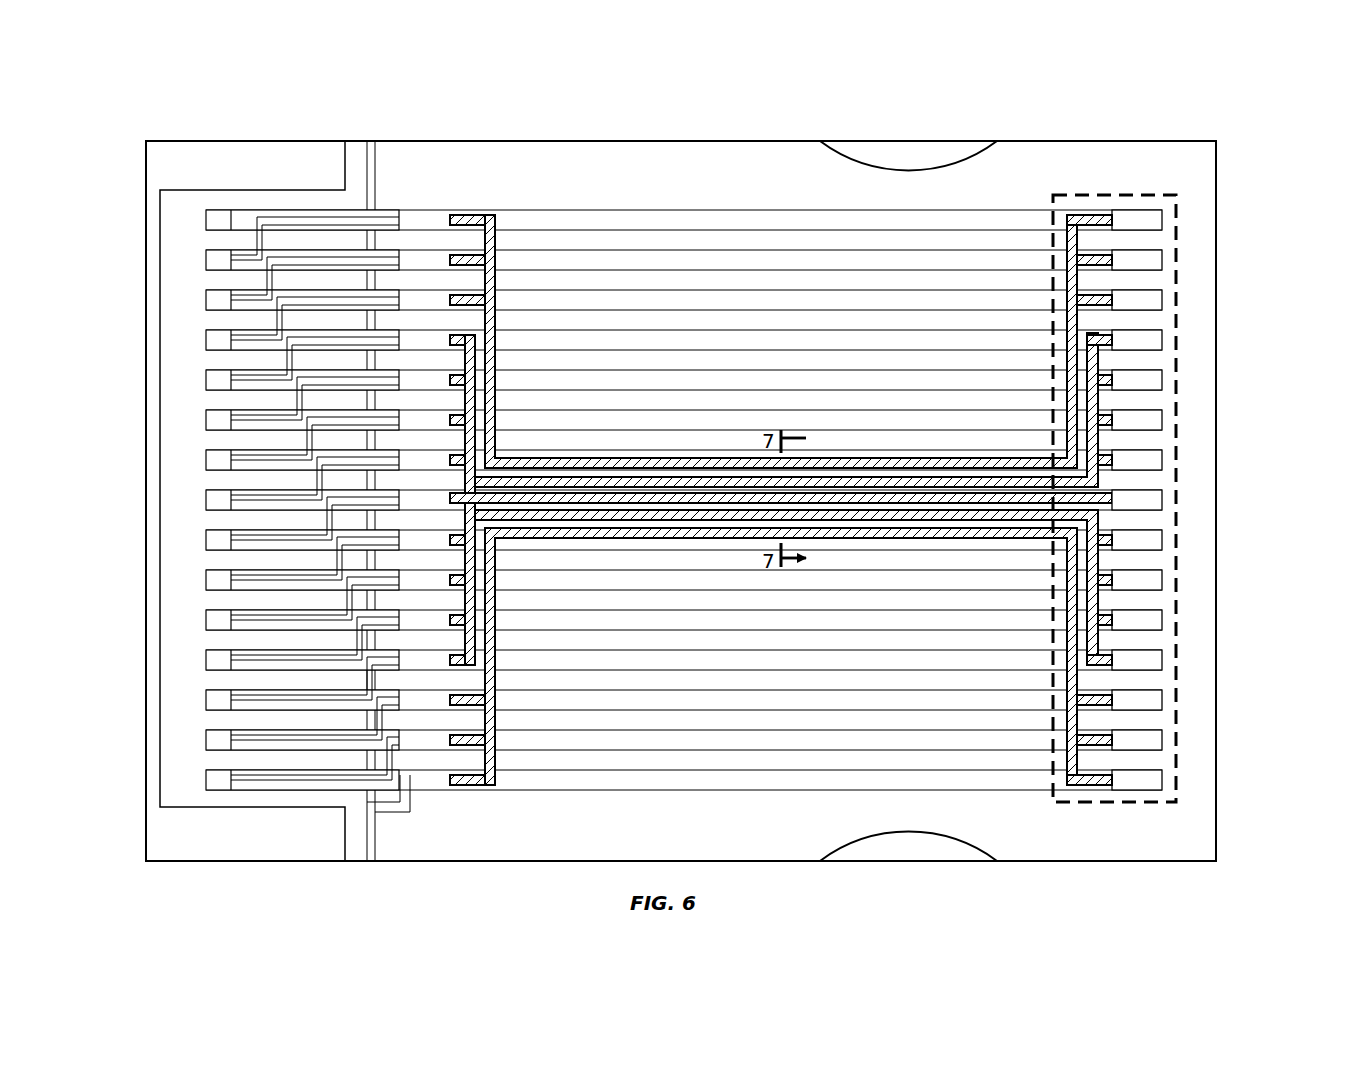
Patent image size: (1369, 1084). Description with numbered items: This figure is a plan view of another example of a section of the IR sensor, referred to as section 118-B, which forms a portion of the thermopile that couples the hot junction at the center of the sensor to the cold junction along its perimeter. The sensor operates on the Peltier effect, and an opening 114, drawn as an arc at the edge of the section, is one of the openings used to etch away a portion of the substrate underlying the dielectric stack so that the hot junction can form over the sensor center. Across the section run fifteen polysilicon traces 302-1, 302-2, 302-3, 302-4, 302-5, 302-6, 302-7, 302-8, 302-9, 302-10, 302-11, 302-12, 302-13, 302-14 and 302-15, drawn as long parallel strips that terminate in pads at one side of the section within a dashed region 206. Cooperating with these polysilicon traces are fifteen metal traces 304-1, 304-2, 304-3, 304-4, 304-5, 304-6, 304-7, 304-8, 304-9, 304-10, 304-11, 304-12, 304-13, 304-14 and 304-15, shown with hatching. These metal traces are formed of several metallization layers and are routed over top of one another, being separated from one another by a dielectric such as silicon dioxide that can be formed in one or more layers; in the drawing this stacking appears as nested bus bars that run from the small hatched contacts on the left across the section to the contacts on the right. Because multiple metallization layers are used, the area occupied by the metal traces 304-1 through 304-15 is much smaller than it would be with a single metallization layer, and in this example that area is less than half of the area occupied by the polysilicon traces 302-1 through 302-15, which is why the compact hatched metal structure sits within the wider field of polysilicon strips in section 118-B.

The section 118-B is at (1249, 162).
The opening 114 is at (966, 840).
The connector region 206 is at (1113, 195).
The polysilicon trace 302-1 is at (1162, 220).
The polysilicon trace 302-2 is at (1162, 260).
The polysilicon trace 302-3 is at (1162, 300).
The polysilicon trace 302-4 is at (1162, 340).
The polysilicon trace 302-5 is at (1162, 380).
The polysilicon trace 302-6 is at (1162, 420).
The polysilicon trace 302-7 is at (1162, 460).
The polysilicon trace 302-8 is at (1162, 500).
The polysilicon trace 302-9 is at (1162, 540).
The polysilicon trace 302-10 is at (1162, 580).
The polysilicon trace 302-11 is at (1162, 620).
The polysilicon trace 302-12 is at (1162, 660).
The polysilicon trace 302-13 is at (1162, 700).
The polysilicon trace 302-14 is at (1162, 740).
The polysilicon trace 302-15 is at (1162, 780).
The metal trace 304-1 is at (478, 215).
The metal trace 304-2 is at (455, 257).
The metal trace 304-3 is at (452, 297).
The metal trace 304-4 is at (450, 337).
The metal trace 304-5 is at (450, 377).
The metal trace 304-6 is at (450, 417).
The metal trace 304-7 is at (450, 457).
The metal trace 304-8 is at (620, 503).
The metal trace 304-9 is at (450, 540).
The metal trace 304-10 is at (450, 580).
The metal trace 304-11 is at (450, 620).
The metal trace 304-12 is at (450, 660).
The metal trace 304-13 is at (452, 700).
The metal trace 304-14 is at (460, 742).
The metal trace 304-15 is at (478, 785).